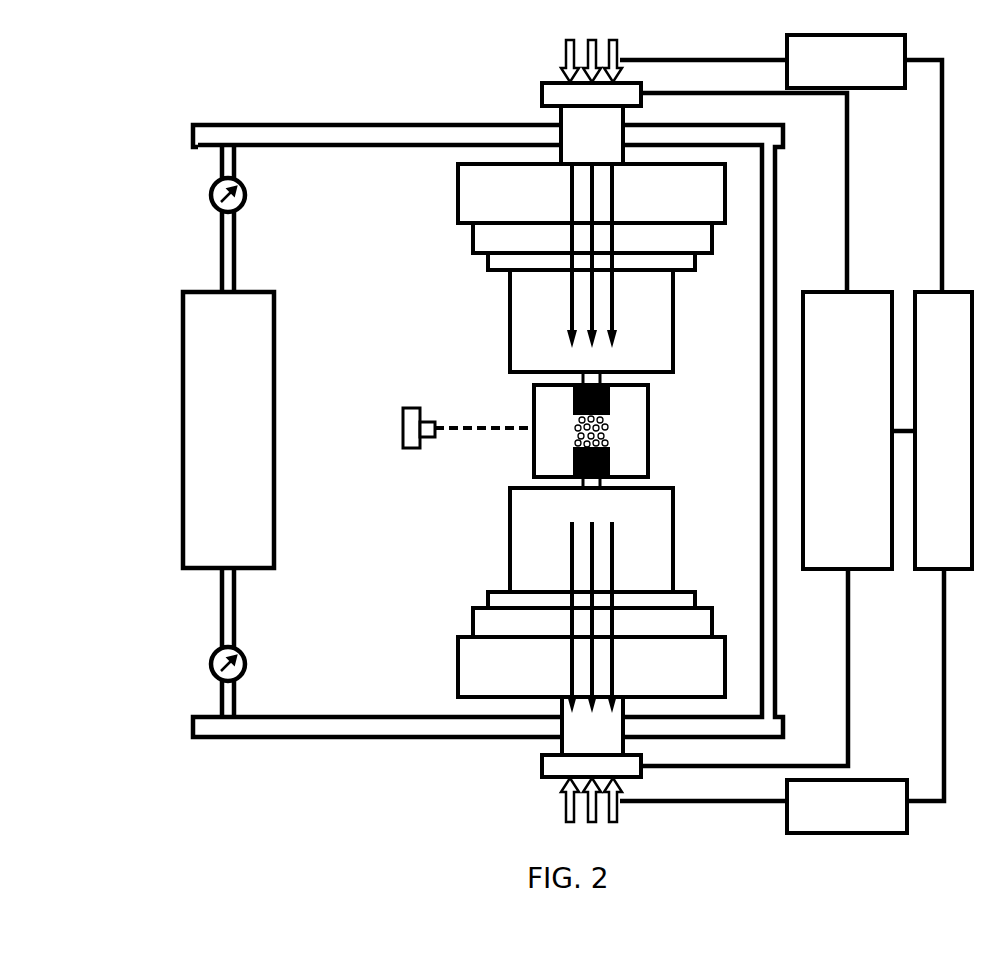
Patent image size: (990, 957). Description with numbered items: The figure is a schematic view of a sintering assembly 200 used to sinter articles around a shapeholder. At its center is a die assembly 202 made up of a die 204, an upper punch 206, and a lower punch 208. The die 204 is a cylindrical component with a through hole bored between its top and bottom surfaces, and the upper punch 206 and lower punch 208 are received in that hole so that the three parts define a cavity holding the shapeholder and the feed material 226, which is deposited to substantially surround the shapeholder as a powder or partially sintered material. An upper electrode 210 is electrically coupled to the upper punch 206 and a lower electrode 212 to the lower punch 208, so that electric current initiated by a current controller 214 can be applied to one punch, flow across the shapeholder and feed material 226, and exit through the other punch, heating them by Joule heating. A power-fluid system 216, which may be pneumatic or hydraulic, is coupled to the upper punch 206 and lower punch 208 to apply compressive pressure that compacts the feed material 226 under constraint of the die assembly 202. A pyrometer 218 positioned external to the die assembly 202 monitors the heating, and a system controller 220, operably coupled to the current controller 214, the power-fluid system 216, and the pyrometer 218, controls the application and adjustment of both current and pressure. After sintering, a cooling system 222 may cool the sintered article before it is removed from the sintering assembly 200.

The sintering assembly 200 is at (148, 255).
The die assembly 202 is at (516, 438).
The die 204 is at (533, 443).
The upper punch 206 is at (573, 395).
The lower punch 208 is at (573, 460).
The upper electrode 210 is at (560, 117).
The lower electrode 212 is at (558, 738).
The current controller 214 is at (847, 430).
The power-fluid system 216 is at (847, 434).
The pyrometer 218 is at (402, 440).
The system controller 220 is at (943, 430).
The cooling system 222 is at (228, 431).
The feed material 226 is at (603, 437).